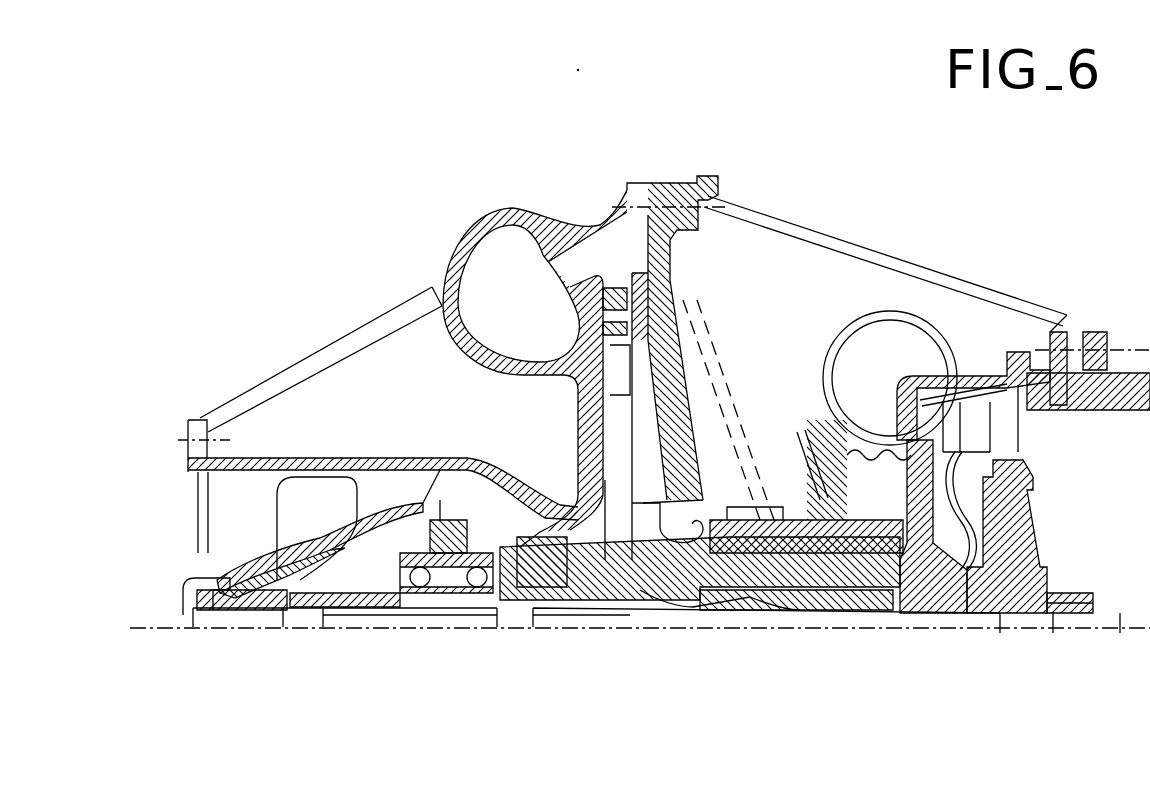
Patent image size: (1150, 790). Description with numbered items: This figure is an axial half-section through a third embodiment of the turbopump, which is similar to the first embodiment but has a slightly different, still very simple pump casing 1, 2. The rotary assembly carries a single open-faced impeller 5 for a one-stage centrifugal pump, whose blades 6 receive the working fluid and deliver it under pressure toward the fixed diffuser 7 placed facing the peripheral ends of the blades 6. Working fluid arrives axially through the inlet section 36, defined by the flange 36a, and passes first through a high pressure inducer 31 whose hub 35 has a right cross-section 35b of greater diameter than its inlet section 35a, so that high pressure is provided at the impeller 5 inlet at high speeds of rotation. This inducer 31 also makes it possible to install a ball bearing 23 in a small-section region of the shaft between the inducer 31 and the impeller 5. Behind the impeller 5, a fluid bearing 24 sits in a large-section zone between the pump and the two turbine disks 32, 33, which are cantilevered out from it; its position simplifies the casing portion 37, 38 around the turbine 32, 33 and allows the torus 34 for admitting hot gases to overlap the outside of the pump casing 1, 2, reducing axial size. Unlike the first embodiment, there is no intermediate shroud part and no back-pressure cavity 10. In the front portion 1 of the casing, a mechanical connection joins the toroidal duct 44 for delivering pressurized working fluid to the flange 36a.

The outer front portion of the pump casing 1 is at (342, 458).
The pump casing portion 2 is at (712, 196).
The impeller 5 is at (641, 525).
The blades 6 is at (597, 528).
The fixed diffuser 7 is at (612, 305).
The cavity 10 is at (1085, 622).
The ball bearing 23 is at (440, 595).
The fluid bearing 24 is at (743, 555).
The high pressure inducer 31 is at (297, 522).
The turbine disk 32 is at (912, 500).
The turbine disk 33 is at (1048, 525).
The torus 34 is at (885, 320).
The hub 35 is at (320, 605).
The inlet section of the inducer hub 35a is at (195, 605).
The right cross-section of the inducer hub 35b is at (398, 500).
The inlet section 36 is at (205, 462).
The flange 36a is at (198, 416).
The casing portion around the turbine 37 is at (977, 378).
The casing portion around the turbine 38 is at (1027, 315).
The toroidal duct 44 is at (495, 232).